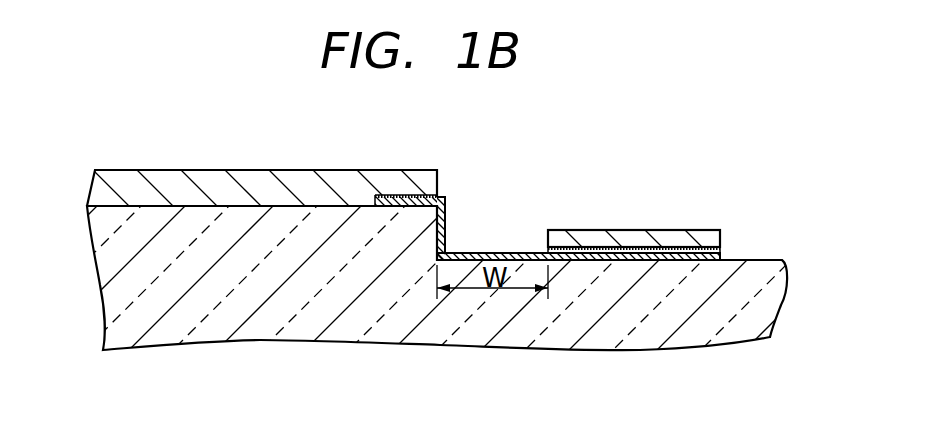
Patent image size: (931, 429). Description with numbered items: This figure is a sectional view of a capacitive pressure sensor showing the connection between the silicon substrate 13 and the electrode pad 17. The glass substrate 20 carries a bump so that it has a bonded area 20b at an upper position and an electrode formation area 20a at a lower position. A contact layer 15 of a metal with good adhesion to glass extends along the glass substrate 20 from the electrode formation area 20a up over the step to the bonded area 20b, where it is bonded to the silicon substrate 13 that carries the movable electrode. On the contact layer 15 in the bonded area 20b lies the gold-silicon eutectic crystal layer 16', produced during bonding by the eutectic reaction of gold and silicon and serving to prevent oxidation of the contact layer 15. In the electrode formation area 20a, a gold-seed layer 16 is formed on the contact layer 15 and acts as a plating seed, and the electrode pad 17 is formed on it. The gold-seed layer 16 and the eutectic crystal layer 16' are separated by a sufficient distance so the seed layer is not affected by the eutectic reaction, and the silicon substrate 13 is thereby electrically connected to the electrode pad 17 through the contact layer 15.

The silicon substrate 13 is at (317, 187).
The contact layer 15 is at (447, 214).
The gold-seed layer 16 is at (645, 209).
The gold-silicon eutectic crystal layer 16' is at (404, 165).
The electrode pad 17 is at (643, 232).
The glass substrate 20 is at (697, 332).
The electrode formation area 20a is at (759, 256).
The bonded area 20b is at (176, 206).